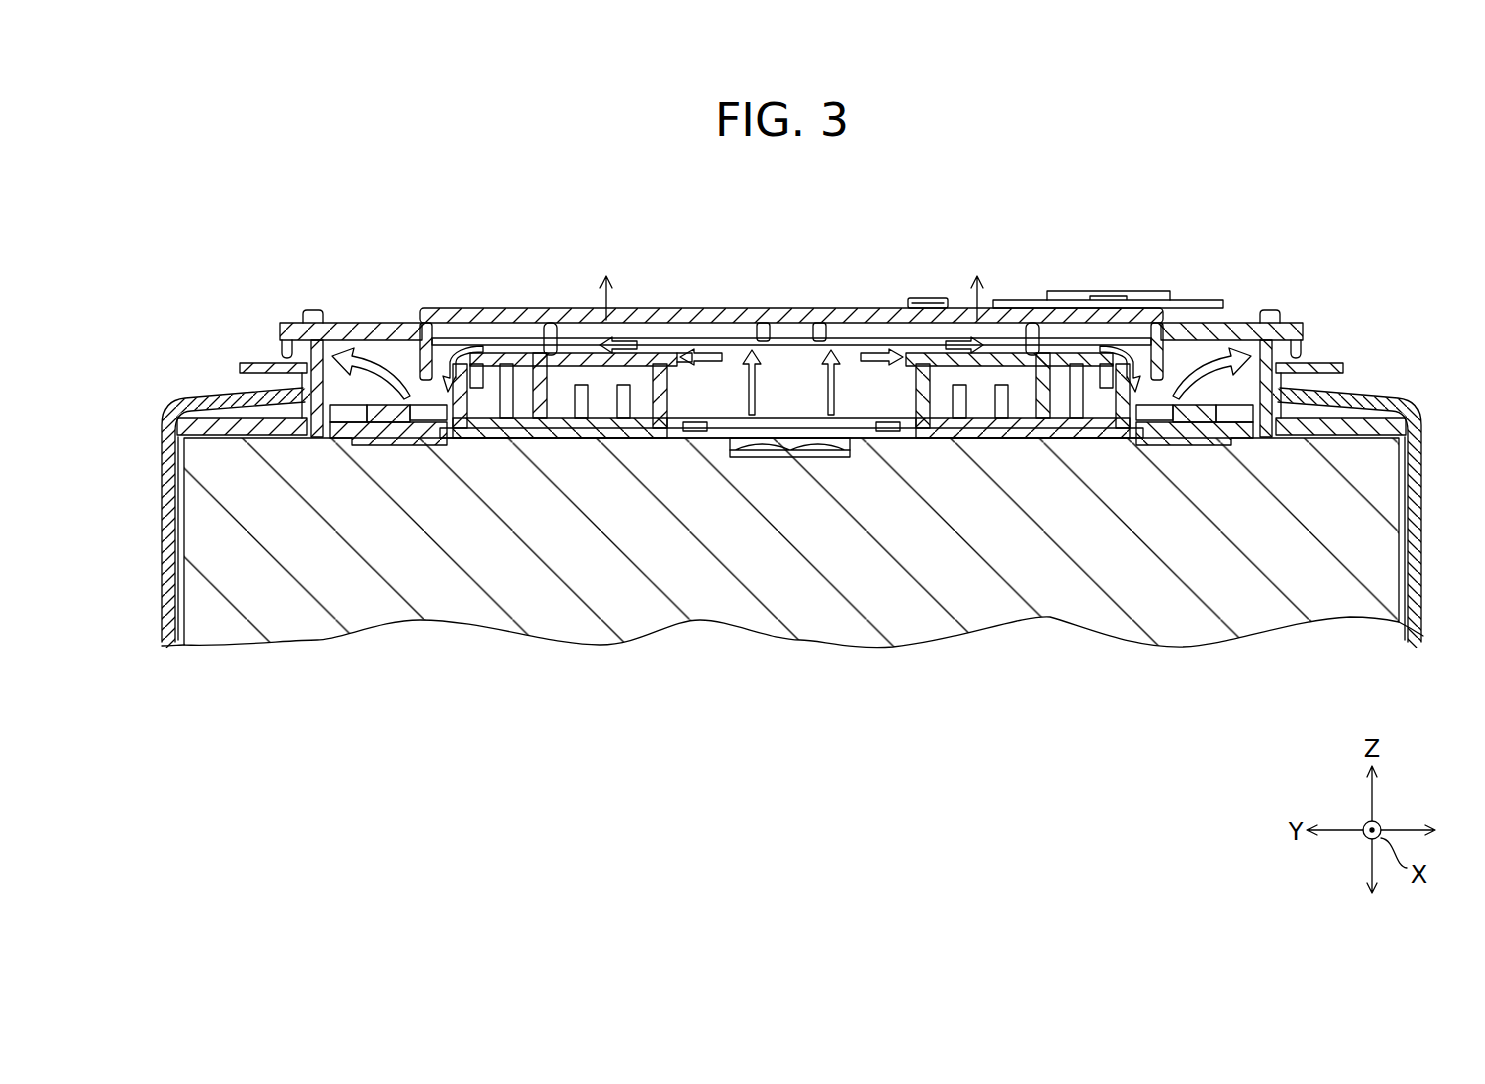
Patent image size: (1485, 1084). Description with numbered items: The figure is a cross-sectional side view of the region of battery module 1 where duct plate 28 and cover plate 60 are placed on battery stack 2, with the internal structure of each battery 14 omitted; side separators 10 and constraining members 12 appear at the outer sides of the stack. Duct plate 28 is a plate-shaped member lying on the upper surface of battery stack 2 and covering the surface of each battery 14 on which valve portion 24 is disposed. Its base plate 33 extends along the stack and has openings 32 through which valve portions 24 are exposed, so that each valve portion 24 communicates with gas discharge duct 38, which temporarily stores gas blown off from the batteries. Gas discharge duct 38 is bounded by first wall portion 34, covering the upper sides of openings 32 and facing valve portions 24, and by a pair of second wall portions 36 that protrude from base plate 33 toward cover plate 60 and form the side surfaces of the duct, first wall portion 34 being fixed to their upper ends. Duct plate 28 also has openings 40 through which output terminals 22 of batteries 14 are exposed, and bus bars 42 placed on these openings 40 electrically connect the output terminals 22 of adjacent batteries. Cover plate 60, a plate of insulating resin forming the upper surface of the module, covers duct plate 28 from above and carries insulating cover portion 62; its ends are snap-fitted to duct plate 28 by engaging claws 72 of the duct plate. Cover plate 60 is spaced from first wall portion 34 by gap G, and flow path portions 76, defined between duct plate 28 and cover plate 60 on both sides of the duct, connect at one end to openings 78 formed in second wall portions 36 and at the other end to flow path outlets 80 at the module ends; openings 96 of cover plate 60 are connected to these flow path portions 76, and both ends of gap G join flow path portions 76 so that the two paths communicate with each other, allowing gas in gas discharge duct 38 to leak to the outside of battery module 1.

The battery module 1 is at (782, 785).
The battery stack 2 is at (1388, 638).
The side separator 10 is at (215, 404).
The constraining member 12 is at (168, 622).
The battery 14 is at (1291, 605).
The output terminal 22 is at (395, 438).
The valve portion 24 is at (815, 458).
The duct plate 28 is at (558, 440).
The opening 32 is at (735, 330).
The base plate 33 is at (683, 440).
The first wall portion 34 is at (966, 330).
The second wall portion 36 is at (632, 440).
The gas discharge duct 38 is at (840, 340).
The opening 40 is at (287, 440).
The bus bar 42 is at (350, 447).
The cover plate 60 is at (470, 308).
The insulating cover portion 62 is at (1062, 294).
The engaging claw 72 is at (312, 310).
The flow path portion 76 is at (386, 355).
The opening 78 is at (680, 308).
The flow path outlet 80 is at (321, 340).
The opening 96 is at (549, 345).
The gap G is at (742, 315).